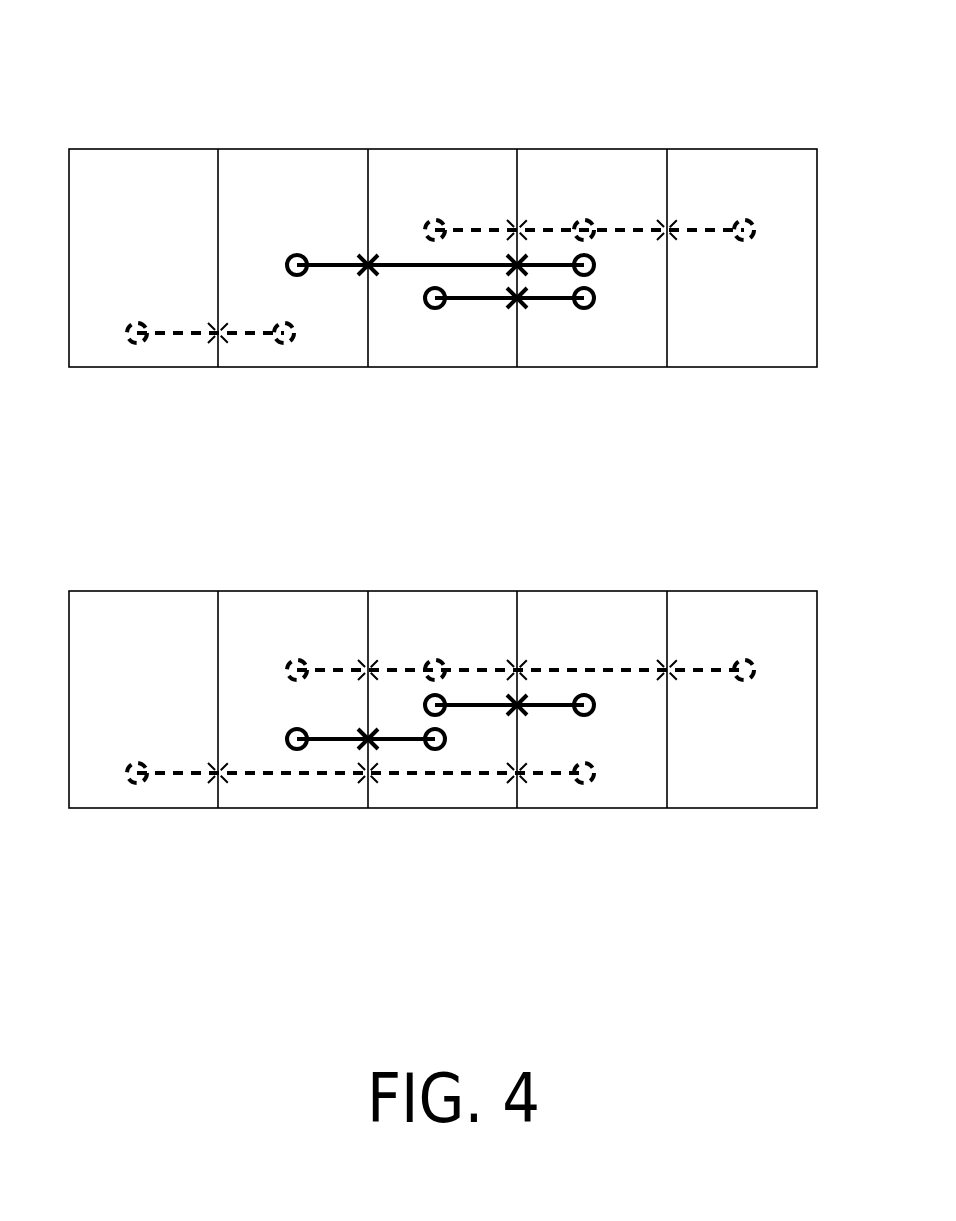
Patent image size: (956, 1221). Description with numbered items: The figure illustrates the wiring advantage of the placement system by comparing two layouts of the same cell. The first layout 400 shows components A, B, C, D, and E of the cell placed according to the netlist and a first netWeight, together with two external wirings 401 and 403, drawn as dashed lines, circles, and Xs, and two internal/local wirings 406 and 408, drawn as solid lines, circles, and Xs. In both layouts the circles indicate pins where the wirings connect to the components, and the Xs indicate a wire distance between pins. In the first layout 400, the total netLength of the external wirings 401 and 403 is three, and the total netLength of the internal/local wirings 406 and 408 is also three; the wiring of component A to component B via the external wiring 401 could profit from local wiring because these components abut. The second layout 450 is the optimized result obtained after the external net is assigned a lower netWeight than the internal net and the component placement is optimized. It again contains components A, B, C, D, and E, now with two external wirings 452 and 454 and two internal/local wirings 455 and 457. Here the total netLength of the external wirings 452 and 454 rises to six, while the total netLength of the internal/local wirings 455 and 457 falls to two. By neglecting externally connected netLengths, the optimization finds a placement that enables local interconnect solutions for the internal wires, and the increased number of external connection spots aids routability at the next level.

The first layout 400 is at (716, 90).
The external wiring 401 is at (178, 335).
The external wiring 403 is at (637, 232).
The internal/local wiring 406 is at (480, 299).
The internal/local wiring 408 is at (412, 267).
The second layout 450 is at (716, 551).
The external wiring 452 is at (178, 775).
The external wiring 454 is at (635, 672).
The internal/local wiring 455 is at (413, 740).
The internal/local wiring 457 is at (500, 706).